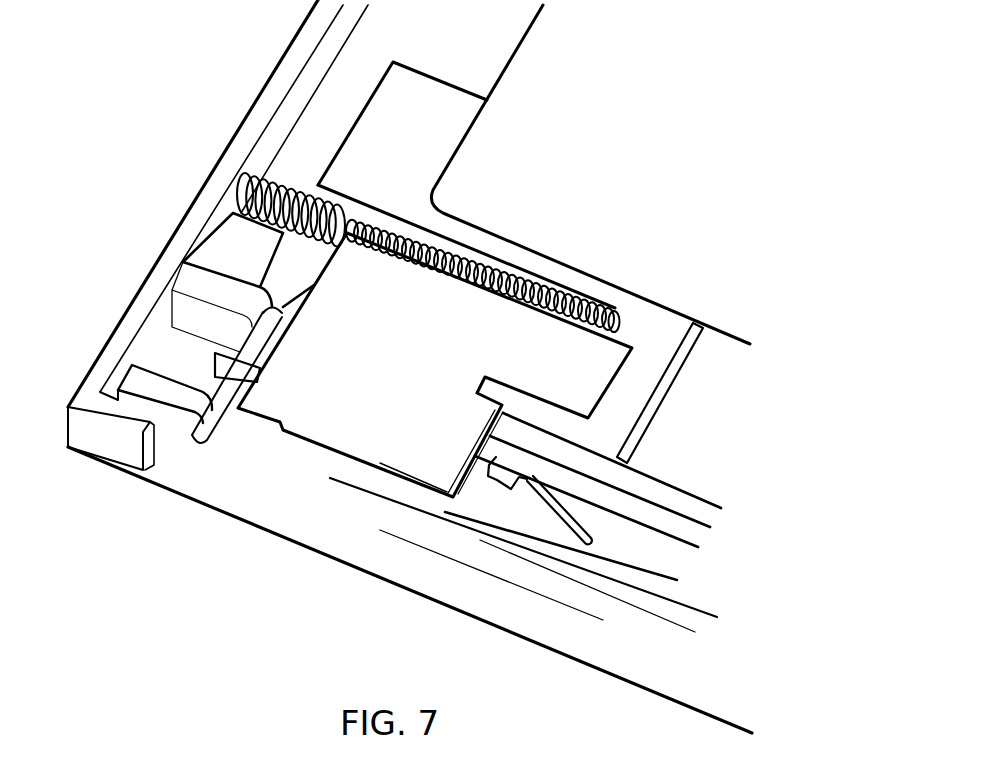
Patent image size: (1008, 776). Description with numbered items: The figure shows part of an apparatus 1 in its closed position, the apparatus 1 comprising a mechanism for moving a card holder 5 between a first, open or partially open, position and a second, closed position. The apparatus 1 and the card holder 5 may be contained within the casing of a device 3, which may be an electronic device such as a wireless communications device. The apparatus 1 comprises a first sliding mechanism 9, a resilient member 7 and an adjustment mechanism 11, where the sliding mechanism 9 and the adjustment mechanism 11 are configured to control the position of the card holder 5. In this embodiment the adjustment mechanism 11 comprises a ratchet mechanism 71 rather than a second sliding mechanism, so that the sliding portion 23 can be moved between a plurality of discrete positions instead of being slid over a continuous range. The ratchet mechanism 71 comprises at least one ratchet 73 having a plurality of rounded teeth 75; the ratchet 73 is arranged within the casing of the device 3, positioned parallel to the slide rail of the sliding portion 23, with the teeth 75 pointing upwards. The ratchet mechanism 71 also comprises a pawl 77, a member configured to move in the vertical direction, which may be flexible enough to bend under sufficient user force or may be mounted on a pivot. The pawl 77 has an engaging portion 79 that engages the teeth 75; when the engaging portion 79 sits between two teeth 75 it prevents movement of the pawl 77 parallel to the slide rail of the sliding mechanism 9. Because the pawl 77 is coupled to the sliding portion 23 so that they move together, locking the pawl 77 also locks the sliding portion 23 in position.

The apparatus 1 is at (253, 407).
The device 3 is at (120, 163).
The card holder 5 is at (546, 156).
The resilient member 7 is at (256, 175).
The sliding mechanism 9 is at (368, 127).
The adjustment mechanism 11 is at (282, 425).
The sliding portion 23 is at (426, 100).
The ratchet mechanism 71 is at (483, 488).
The ratchet 73 is at (590, 530).
The teeth 75 is at (524, 484).
The pawl 77 is at (404, 365).
The engaging portion 79 is at (430, 510).